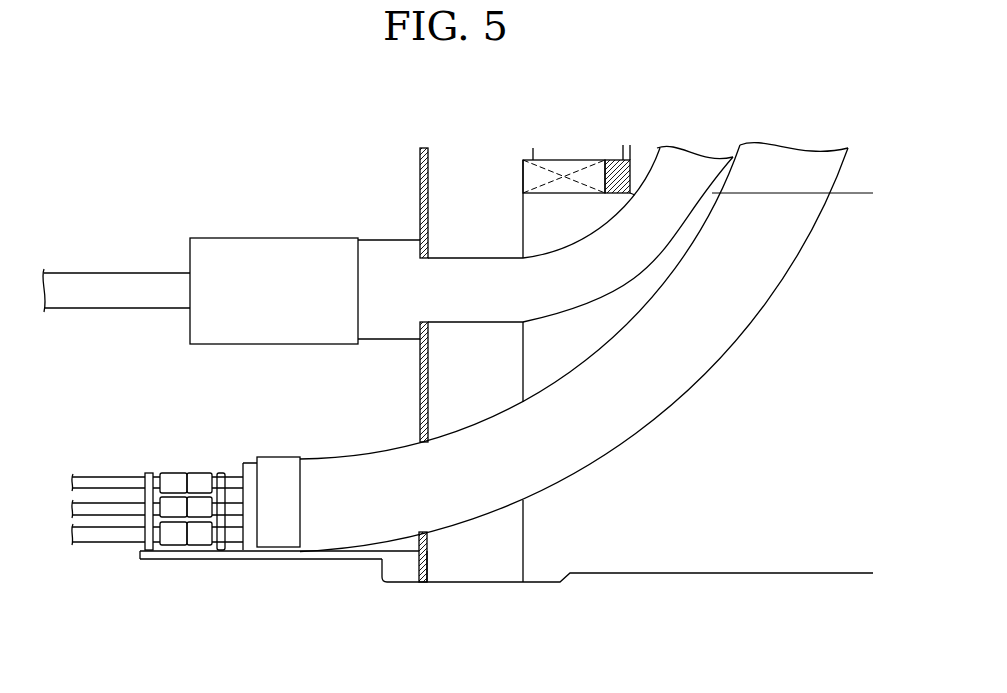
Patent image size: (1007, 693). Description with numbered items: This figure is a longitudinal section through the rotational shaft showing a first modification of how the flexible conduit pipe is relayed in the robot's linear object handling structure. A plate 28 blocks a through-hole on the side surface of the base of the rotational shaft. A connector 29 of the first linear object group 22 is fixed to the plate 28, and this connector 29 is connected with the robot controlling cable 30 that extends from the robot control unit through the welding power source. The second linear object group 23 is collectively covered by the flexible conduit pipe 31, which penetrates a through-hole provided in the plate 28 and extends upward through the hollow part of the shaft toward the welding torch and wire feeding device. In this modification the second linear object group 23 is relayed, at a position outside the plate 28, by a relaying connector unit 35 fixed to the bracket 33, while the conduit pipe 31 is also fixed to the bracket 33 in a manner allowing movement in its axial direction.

The first linear object group 22 is at (474, 238).
The second linear object group 23 is at (586, 347).
The plate 28 is at (420, 190).
The connector 29 is at (385, 341).
The robot controlling cable 30 is at (105, 254).
The conduit pipe 31 is at (772, 303).
The bracket 33 is at (275, 560).
The relaying connector unit 35 is at (170, 449).